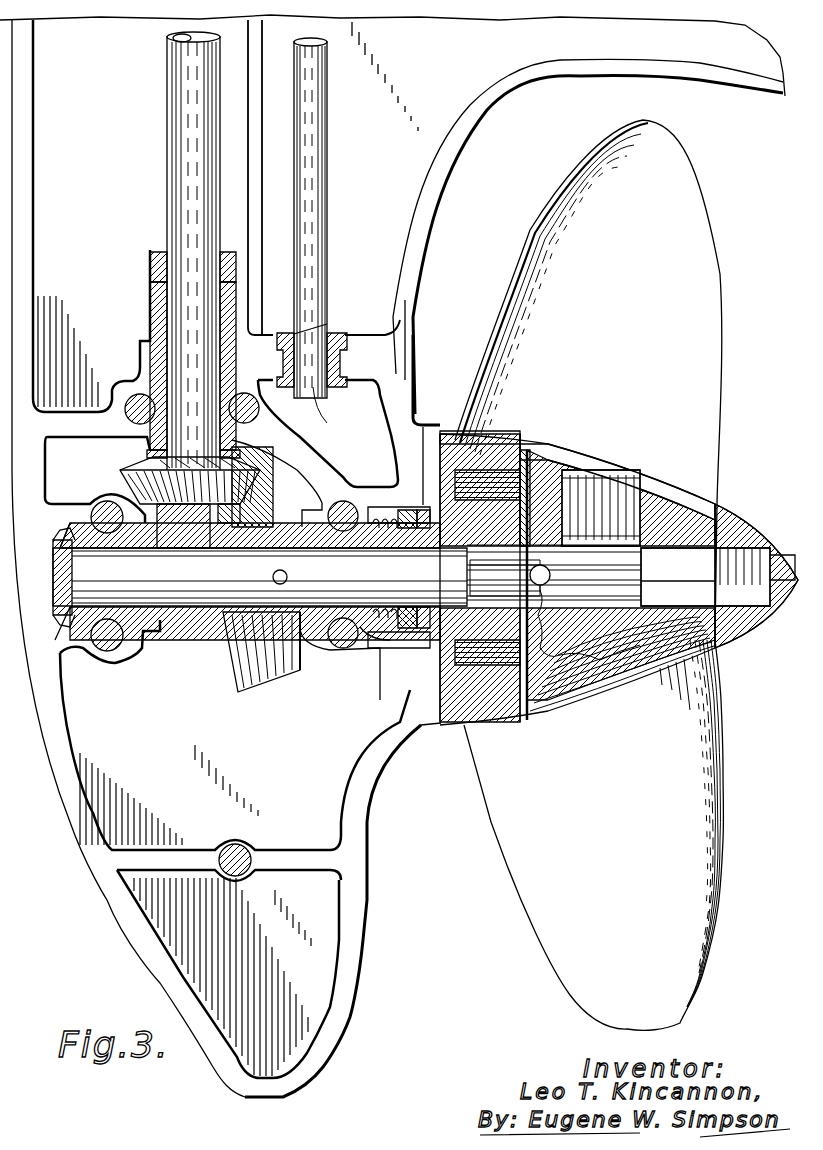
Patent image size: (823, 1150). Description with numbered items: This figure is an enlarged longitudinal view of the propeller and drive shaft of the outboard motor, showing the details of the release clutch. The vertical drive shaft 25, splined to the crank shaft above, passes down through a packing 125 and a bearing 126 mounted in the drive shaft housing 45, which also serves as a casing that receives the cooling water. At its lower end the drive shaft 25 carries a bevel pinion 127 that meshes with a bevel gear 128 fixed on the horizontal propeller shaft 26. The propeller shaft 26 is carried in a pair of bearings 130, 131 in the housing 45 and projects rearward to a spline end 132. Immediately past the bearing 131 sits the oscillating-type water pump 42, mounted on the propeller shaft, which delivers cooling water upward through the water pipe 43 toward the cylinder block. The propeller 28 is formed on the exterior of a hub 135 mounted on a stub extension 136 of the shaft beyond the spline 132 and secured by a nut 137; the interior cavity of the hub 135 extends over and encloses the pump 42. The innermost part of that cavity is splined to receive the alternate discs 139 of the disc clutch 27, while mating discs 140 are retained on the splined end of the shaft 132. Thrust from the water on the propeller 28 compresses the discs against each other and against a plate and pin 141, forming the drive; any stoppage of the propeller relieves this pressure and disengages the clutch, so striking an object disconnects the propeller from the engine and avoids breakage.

The drive shaft 25 is at (168, 188).
The propeller shaft 26 is at (260, 577).
The disc clutch 27 is at (612, 476).
The propeller 28 is at (630, 316).
The water pump 42 is at (545, 630).
The water pipe 43 is at (318, 222).
The drive shaft housing 45 is at (22, 183).
The packing 125 is at (150, 263).
The bearing 126 is at (153, 325).
The bevel pinion 127 is at (125, 480).
The bevel gear 128 is at (248, 695).
The bearing 130 is at (188, 632).
The bearing 131 is at (308, 655).
The spline end 132 is at (602, 573).
The hub 135 is at (512, 440).
The stub extension 136 is at (690, 586).
The nut 137 is at (740, 522).
The alternate discs 139 is at (590, 472).
The mating discs 140 is at (570, 455).
The pin 141 is at (555, 470).